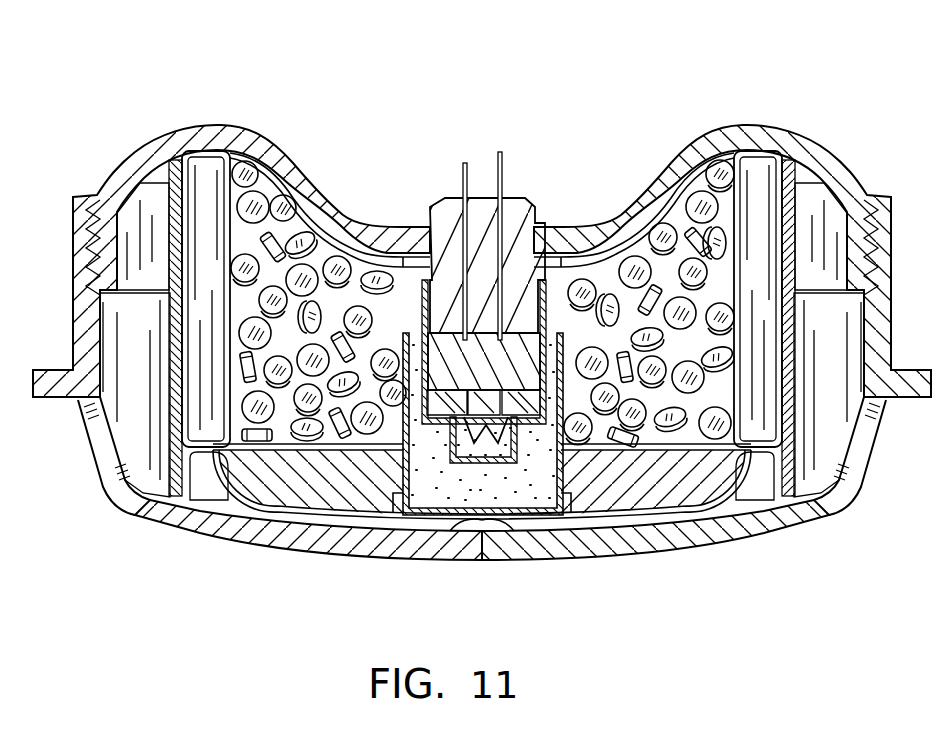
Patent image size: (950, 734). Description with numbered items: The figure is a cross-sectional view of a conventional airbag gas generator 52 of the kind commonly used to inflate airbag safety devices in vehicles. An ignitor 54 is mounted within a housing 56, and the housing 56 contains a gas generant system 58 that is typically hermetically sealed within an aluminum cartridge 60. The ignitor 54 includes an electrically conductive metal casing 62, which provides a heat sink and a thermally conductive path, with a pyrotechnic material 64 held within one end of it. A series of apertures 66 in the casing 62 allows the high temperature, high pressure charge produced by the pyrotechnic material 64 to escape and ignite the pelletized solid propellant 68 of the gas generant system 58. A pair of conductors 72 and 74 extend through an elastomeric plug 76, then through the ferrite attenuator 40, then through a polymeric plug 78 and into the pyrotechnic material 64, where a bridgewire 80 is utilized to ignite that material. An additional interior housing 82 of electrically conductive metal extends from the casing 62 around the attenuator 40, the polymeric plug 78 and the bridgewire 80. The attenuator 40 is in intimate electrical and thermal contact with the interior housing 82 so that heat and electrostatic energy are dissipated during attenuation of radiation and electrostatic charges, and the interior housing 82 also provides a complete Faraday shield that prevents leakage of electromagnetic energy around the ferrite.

The airbag gas generator 52 is at (748, 97).
The ignitor 54 is at (545, 178).
The housing 56 is at (203, 543).
The gas generant system 58 is at (338, 450).
The aluminum cartridge 60 is at (653, 456).
The electrically conductive metal casing 62 is at (437, 243).
The pyrotechnic material 64 is at (523, 494).
The apertures 66 is at (409, 468).
The pelletized solid propellant 68 is at (322, 233).
The conductor 72 is at (465, 163).
The conductor 74 is at (500, 152).
The elastomeric plug 76 is at (520, 226).
The polymeric plug 78 is at (495, 432).
The bridgewire 80 is at (453, 462).
The interior housing 82 is at (567, 481).
The ferrite attenuator 40 is at (508, 292).